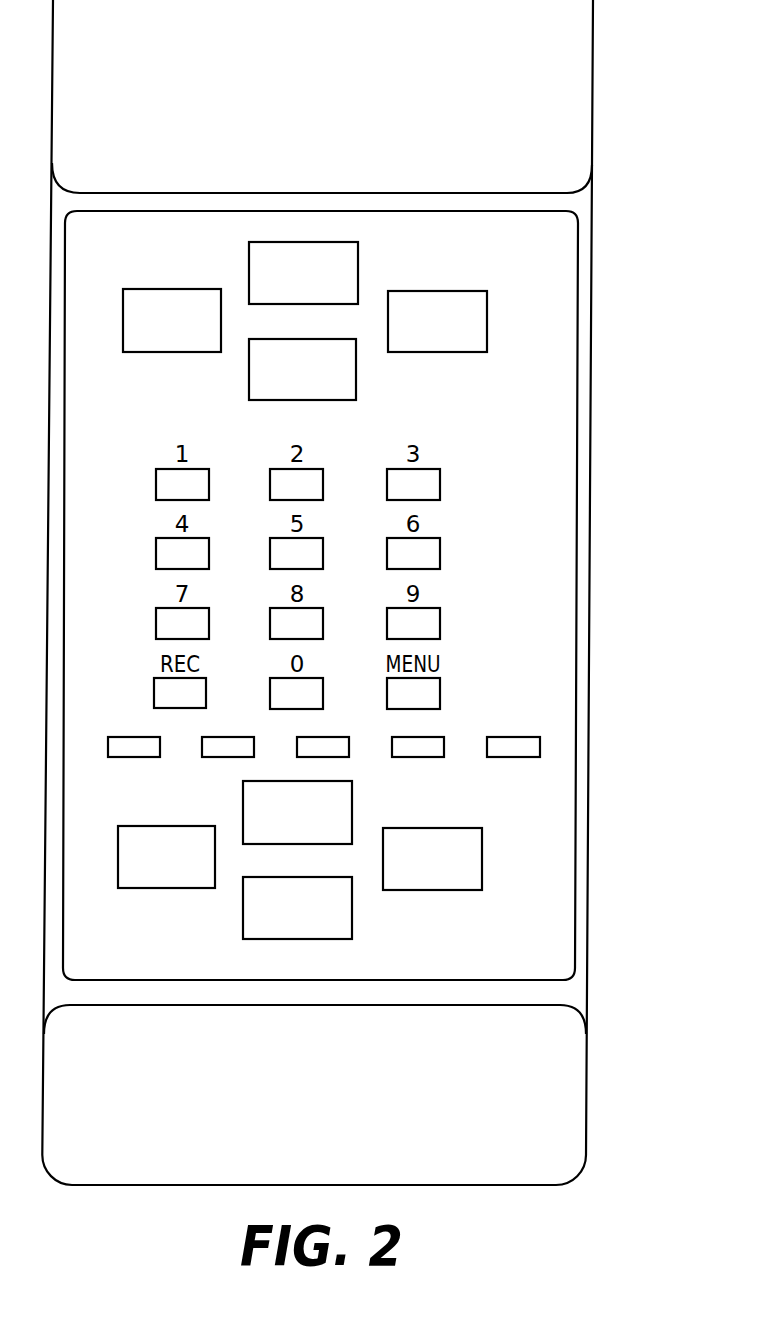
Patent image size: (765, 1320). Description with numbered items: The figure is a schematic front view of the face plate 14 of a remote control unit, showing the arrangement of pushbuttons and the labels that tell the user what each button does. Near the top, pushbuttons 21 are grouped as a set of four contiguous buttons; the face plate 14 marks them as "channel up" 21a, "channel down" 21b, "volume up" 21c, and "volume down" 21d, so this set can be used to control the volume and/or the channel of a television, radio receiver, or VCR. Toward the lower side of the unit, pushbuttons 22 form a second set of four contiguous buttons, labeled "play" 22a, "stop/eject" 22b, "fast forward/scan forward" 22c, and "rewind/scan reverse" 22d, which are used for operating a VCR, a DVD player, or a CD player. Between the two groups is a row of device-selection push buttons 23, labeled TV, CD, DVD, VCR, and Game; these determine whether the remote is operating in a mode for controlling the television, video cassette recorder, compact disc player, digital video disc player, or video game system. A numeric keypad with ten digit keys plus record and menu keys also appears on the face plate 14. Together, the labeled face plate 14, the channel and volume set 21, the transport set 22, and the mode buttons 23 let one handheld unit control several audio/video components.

The face plate 14 is at (535, 403).
The pushbuttons 21 is at (390, 300).
The channel up pushbutton 21a is at (330, 265).
The channel down pushbutton 21b is at (345, 384).
The volume up pushbutton 21c is at (165, 343).
The volume down pushbutton 21d is at (472, 320).
The pushbuttons 22 is at (366, 859).
The play pushbutton 22a is at (257, 808).
The stop/eject pushbutton 22b is at (330, 935).
The fast forward/scan forward pushbutton 22c is at (118, 869).
The rewind/scan reverse pushbutton 22d is at (466, 851).
The set of push buttons 23 is at (535, 703).